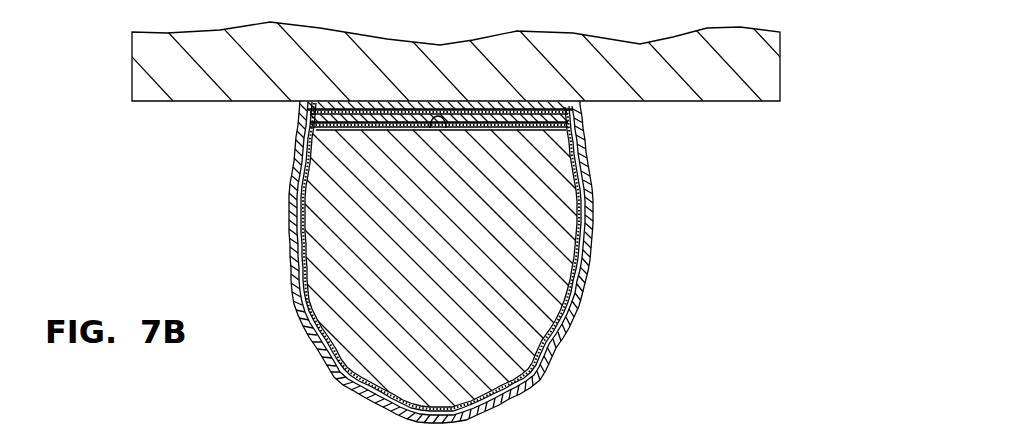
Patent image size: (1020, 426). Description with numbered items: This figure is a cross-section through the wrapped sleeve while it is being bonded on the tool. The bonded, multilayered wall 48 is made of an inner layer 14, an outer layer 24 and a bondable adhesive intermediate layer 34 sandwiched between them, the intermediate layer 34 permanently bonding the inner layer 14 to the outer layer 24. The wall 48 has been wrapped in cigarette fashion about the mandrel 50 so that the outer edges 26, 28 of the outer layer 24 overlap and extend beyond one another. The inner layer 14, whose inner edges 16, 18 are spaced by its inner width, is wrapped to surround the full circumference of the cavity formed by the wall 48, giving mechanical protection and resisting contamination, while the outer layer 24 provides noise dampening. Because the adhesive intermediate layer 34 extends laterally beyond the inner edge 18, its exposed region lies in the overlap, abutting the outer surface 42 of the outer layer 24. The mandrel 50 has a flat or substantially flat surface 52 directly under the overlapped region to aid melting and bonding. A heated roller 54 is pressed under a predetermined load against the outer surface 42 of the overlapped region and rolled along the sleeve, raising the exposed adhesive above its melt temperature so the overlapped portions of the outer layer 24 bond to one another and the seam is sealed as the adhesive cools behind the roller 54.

The heated roller 54 is at (752, 30).
The inner edge 16 is at (302, 108).
The outer edge 26 is at (405, 87).
The outer edge 28 is at (582, 104).
The inner edge 18 is at (296, 114).
The flat surface 52 is at (447, 128).
The outer surface 42 is at (592, 142).
The adhesive intermediate layer 34 is at (578, 245).
The outer layer 24 is at (583, 293).
The inner layer 14 is at (585, 215).
The multilayered wall 48 is at (490, 395).
The mandrel 50 is at (357, 293).